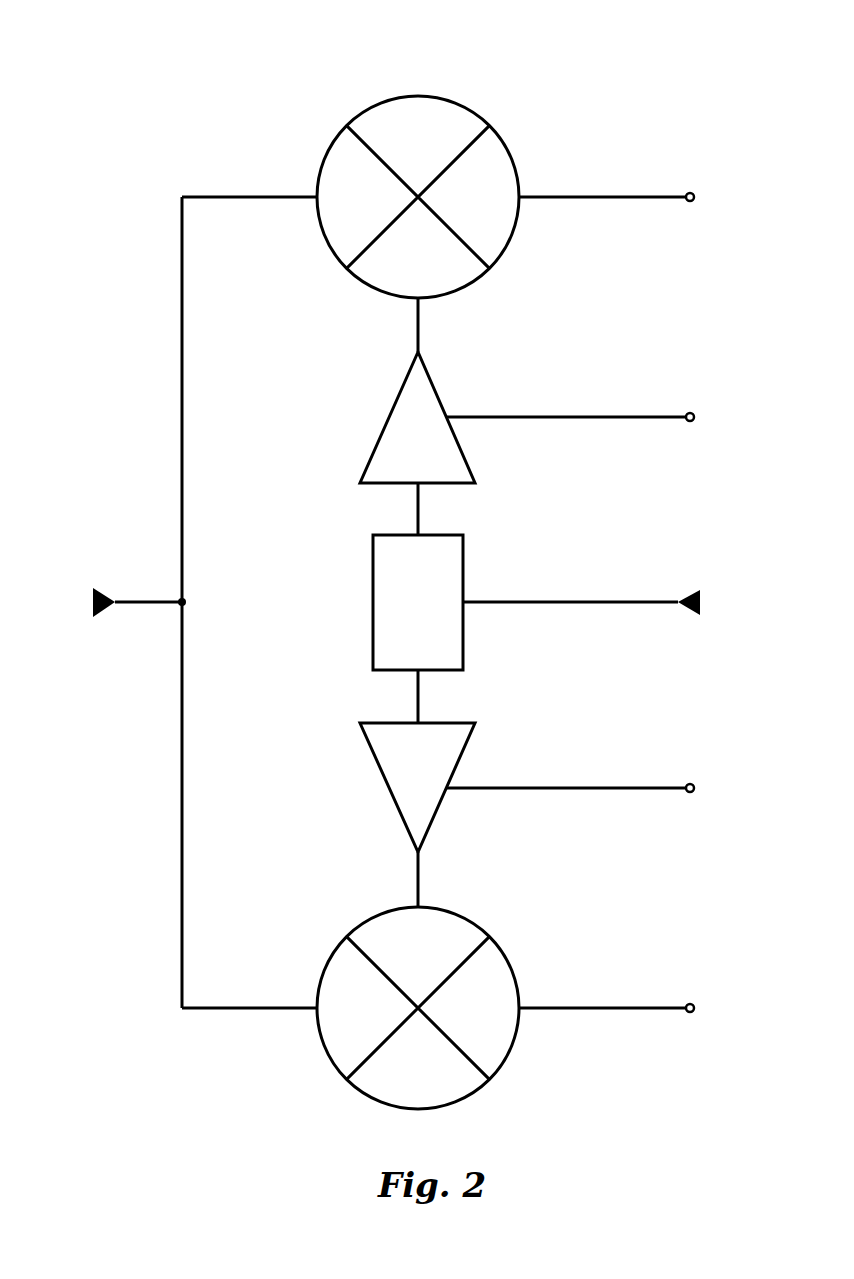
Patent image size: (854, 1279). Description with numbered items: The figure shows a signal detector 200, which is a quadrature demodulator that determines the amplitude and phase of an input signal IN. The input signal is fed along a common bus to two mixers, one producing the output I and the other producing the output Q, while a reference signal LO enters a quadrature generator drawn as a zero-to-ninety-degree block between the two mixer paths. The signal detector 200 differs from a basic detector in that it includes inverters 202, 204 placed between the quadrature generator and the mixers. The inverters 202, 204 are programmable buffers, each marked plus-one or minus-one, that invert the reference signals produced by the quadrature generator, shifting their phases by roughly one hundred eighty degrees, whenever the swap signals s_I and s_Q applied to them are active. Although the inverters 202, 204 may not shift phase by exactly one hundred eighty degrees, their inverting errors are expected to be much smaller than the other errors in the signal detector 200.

The signal detector 200 is at (722, 42).
The inverter 202 is at (357, 423).
The inverter 204 is at (357, 788).